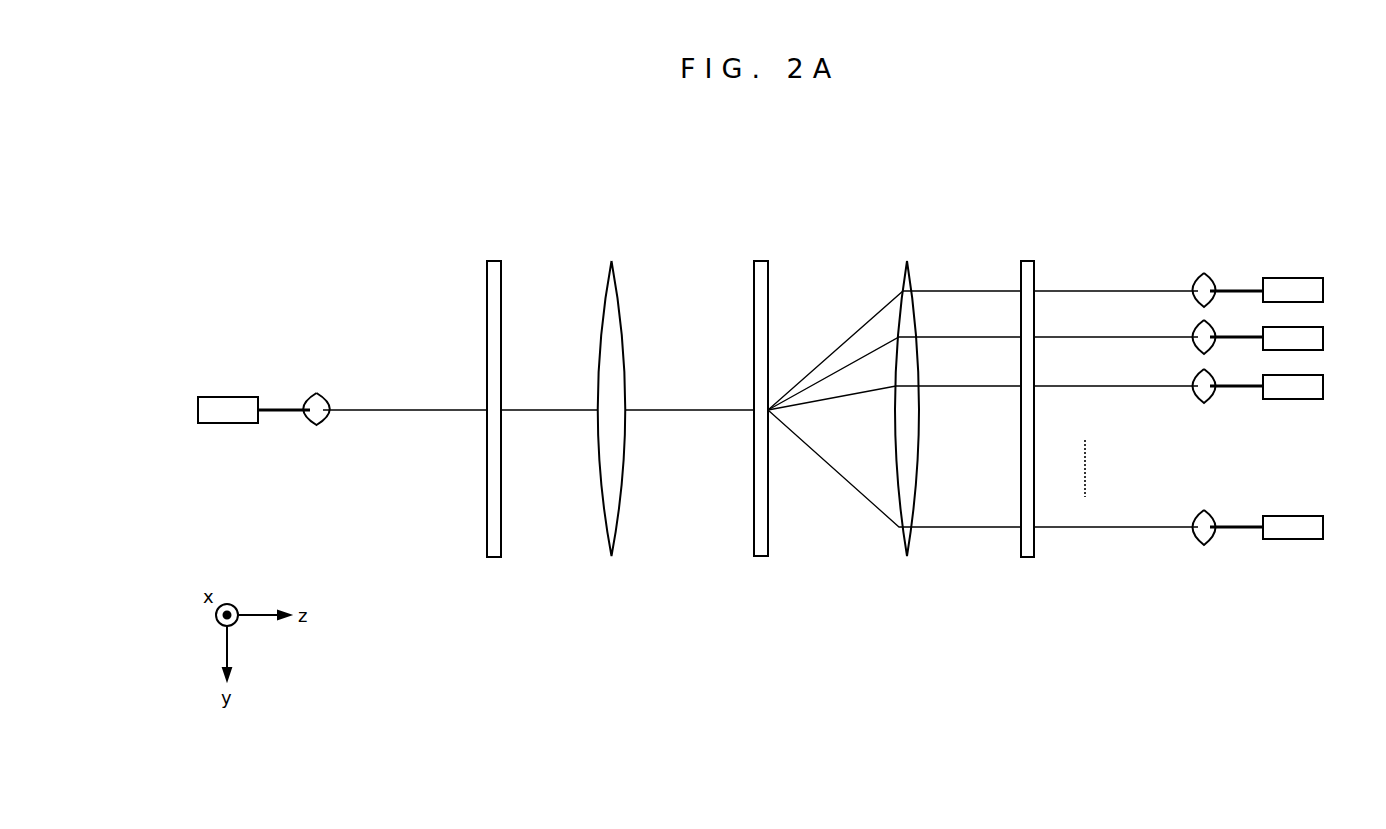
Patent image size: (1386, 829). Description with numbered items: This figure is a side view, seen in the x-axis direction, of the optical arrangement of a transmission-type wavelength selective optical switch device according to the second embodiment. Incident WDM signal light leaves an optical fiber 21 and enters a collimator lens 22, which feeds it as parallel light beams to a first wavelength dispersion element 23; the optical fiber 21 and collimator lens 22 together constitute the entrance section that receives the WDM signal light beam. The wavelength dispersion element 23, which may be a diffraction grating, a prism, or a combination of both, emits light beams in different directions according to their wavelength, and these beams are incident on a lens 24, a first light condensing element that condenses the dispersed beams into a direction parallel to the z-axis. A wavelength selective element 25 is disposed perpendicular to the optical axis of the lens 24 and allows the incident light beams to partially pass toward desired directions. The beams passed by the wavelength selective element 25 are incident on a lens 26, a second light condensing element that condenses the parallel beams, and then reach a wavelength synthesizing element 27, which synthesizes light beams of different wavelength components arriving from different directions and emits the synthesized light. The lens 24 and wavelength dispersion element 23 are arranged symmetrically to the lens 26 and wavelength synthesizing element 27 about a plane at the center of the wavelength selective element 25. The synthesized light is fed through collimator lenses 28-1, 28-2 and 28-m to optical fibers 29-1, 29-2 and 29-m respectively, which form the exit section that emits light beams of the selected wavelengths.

The optical fiber 21 is at (220, 397).
The collimator lens 22 is at (310, 403).
The first wavelength dispersion element 23 is at (502, 272).
The lens 24 is at (617, 277).
The wavelength selective element 25 is at (768, 272).
The lens 26 is at (912, 277).
The wavelength synthesizing element 27 is at (1035, 272).
The collimator lens 28-1 is at (1197, 282).
The collimator lens 28-2 is at (1197, 343).
The collimator lens 28-m is at (1197, 533).
The optical fiber 29-1 is at (1287, 278).
The optical fiber 29-2 is at (1270, 350).
The optical fiber 29-m is at (1287, 540).